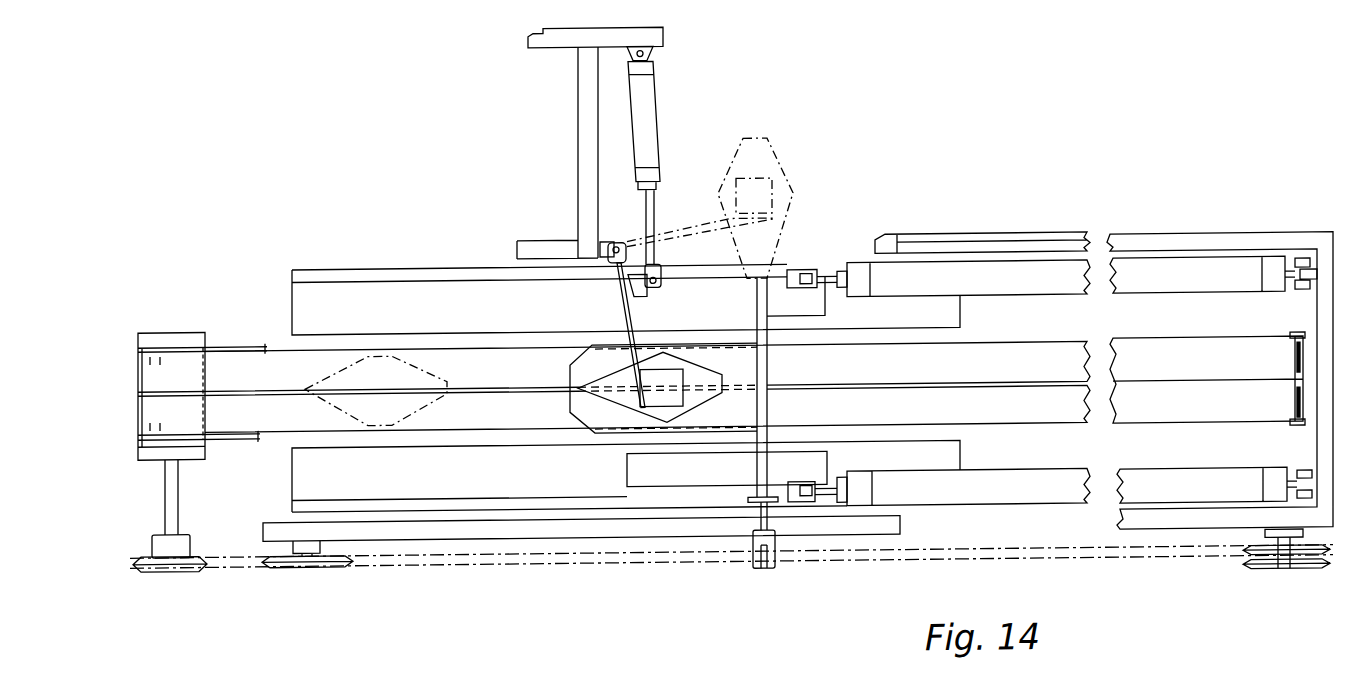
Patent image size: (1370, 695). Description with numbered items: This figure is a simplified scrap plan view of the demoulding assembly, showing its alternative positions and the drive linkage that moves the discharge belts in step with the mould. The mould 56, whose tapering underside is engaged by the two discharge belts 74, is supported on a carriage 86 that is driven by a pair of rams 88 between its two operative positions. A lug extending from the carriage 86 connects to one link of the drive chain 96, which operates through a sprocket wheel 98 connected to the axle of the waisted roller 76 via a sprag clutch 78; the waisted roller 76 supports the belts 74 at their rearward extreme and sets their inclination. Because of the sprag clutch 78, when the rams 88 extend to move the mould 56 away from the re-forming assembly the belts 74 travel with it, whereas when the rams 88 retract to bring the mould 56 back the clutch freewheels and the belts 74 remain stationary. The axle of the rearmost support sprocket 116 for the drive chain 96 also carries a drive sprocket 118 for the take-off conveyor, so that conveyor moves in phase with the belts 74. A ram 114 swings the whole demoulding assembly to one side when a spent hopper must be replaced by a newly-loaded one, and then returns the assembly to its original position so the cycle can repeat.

The mould 56 is at (605, 355).
The discharge belts 74 is at (1243, 405).
The waisted roller 76 is at (178, 328).
The sprag clutch 78 is at (190, 542).
The carriage 86 is at (762, 362).
The rams 88 is at (1013, 276).
The drive chain 96 is at (527, 557).
The sprocket wheel 98 is at (192, 568).
The ram 114 is at (645, 103).
The rearmost support sprocket 116 is at (1315, 577).
The drive sprocket 118 is at (1267, 577).